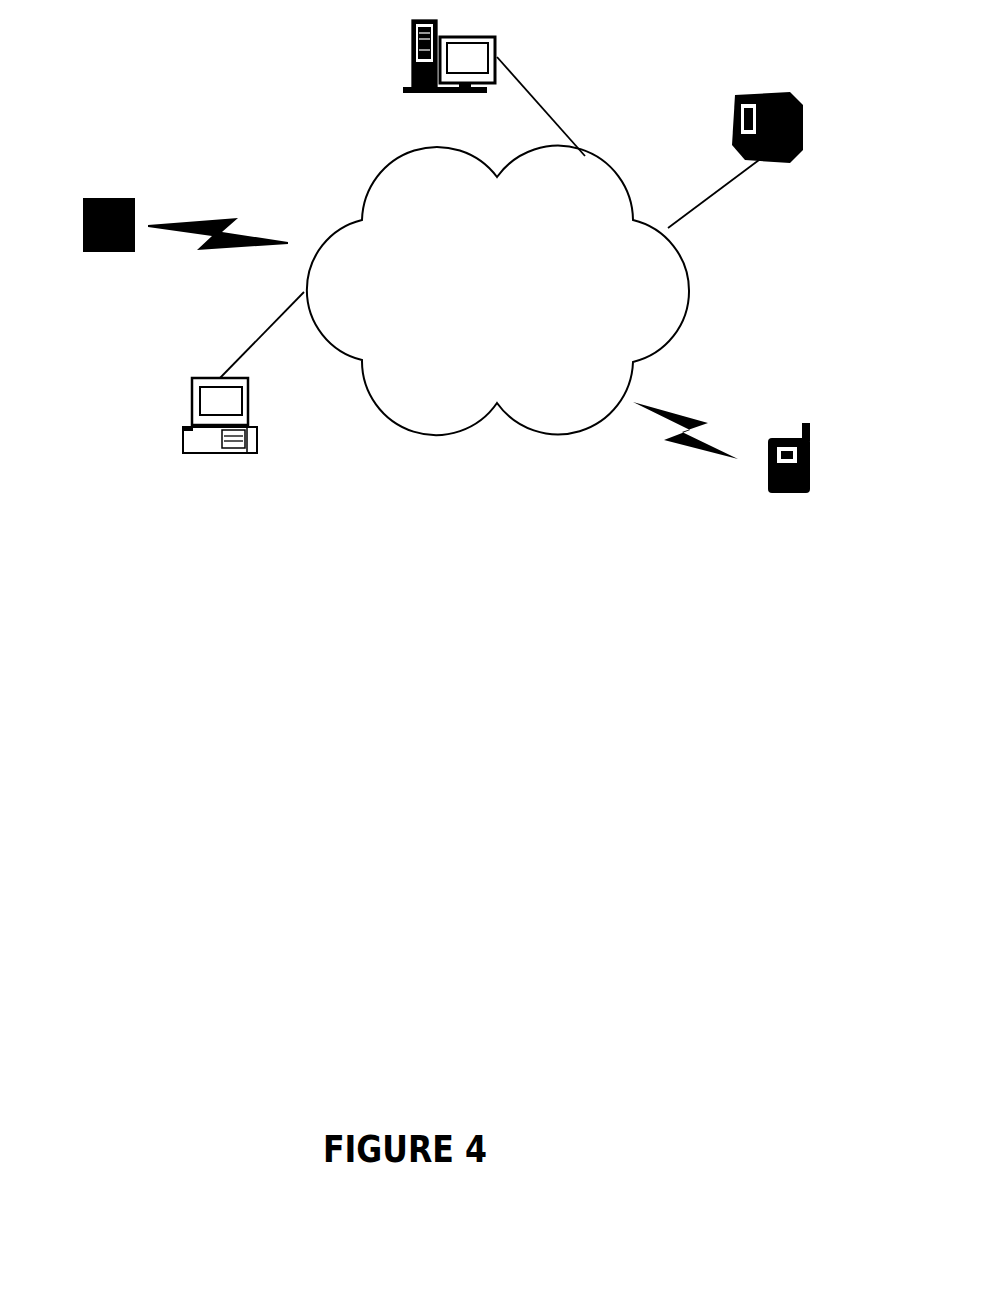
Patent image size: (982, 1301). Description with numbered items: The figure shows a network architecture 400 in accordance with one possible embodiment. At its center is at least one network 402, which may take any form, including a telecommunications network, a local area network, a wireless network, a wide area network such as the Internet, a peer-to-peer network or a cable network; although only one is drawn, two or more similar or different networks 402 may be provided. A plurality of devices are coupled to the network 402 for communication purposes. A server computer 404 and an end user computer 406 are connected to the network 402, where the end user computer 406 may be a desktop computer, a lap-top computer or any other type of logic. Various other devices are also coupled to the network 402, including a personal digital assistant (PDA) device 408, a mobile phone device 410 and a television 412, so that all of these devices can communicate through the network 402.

The network architecture 400 is at (407, 725).
The network 402 is at (553, 435).
The server computer 404 is at (410, 57).
The end user computer 406 is at (183, 428).
The personal digital assistant (PDA) device 408 is at (110, 198).
The mobile phone device 410 is at (767, 442).
The television 412 is at (737, 92).